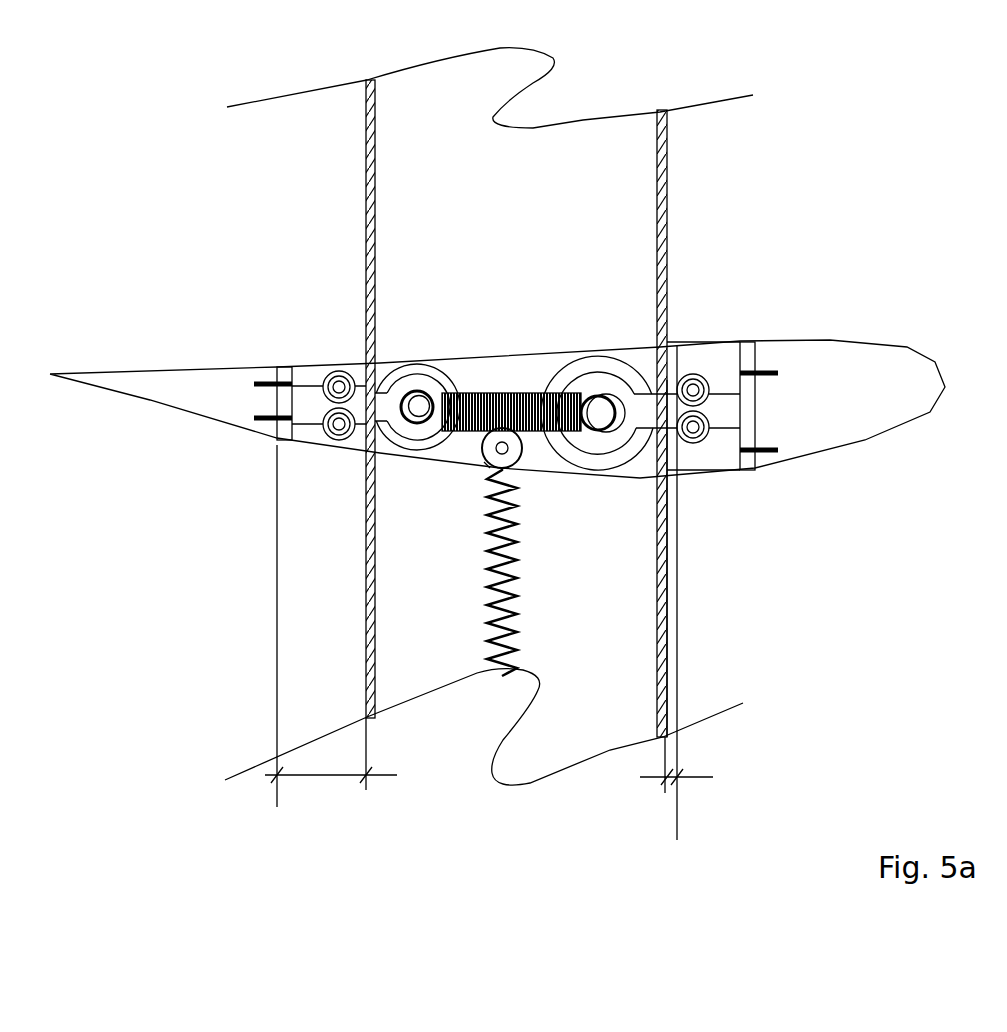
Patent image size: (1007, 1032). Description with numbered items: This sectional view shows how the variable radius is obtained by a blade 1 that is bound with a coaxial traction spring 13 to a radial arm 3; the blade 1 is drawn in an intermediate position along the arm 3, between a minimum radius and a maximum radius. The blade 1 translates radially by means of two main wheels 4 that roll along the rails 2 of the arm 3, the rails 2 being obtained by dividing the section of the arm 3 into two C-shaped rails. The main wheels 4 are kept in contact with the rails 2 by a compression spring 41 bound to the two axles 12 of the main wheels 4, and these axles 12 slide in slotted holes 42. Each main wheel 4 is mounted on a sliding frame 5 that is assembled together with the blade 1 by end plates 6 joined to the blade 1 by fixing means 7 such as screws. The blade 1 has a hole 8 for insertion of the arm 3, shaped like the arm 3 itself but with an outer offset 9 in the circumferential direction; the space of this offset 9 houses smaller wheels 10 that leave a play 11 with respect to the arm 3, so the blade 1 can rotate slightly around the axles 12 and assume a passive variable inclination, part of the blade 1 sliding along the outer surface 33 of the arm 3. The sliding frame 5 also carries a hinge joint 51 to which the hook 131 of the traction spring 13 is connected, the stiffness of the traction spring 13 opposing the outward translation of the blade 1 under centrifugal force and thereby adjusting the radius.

The blade 1 is at (903, 378).
The rails 2 is at (636, 627).
The arm 3 is at (660, 680).
The outer surface 33 is at (665, 650).
The main wheels 4 is at (428, 385).
The compression spring 41 is at (508, 392).
The slotted holes 42 is at (396, 412).
The sliding frame 5 is at (720, 425).
The hinge joint 51 is at (517, 463).
The end plates 6 is at (755, 353).
The fixing means 7 is at (780, 452).
The hole 8 is at (708, 355).
The outer offset 9 is at (331, 763).
The smaller wheels 10 is at (333, 372).
The play 11 is at (677, 793).
The axles 12 is at (420, 410).
The traction spring 13 is at (512, 620).
The hook 131 is at (490, 462).